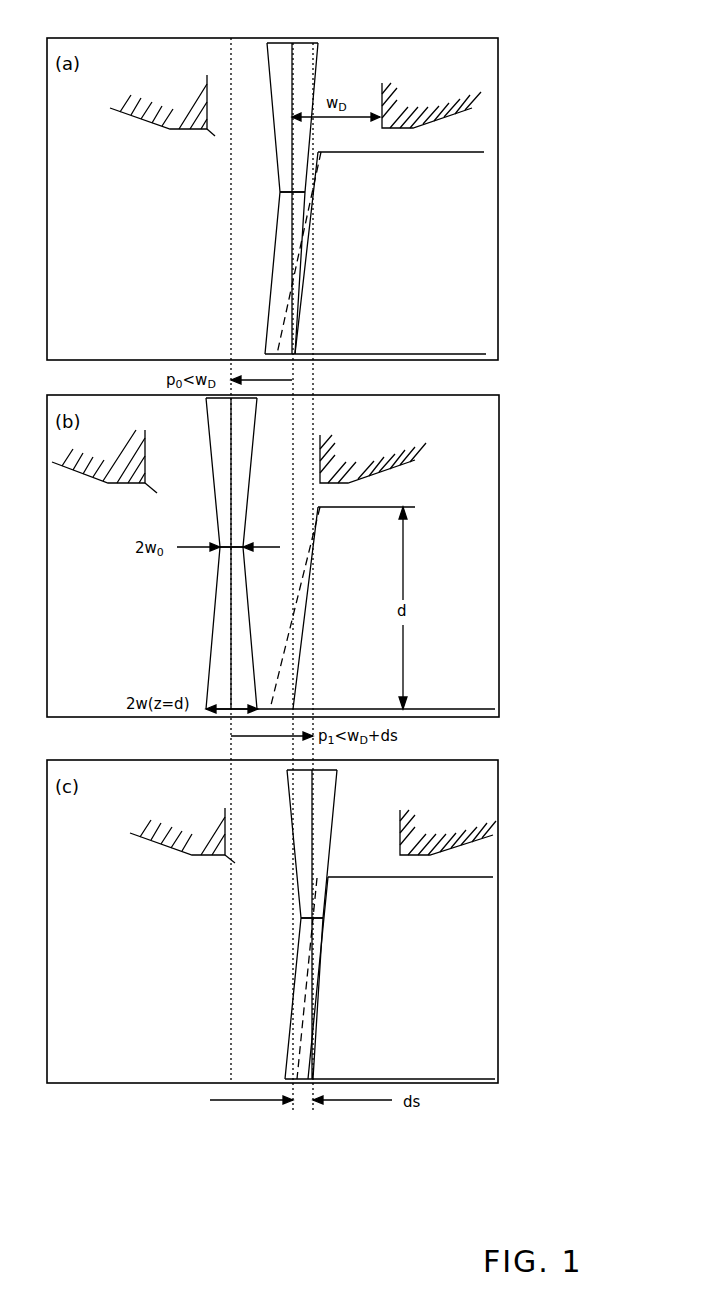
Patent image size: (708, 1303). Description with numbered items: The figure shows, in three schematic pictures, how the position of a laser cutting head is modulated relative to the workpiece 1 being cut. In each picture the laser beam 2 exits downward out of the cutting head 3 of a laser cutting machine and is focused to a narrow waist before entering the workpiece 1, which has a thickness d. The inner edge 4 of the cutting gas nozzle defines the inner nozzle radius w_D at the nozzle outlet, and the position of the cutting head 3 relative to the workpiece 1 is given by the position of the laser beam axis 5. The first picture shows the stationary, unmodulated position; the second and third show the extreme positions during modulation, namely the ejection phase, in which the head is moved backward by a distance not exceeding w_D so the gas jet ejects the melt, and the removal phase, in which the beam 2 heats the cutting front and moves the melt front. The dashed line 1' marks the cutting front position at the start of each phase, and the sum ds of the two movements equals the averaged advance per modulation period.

The workpiece 1 is at (350, 615).
The cutting front position 1' is at (285, 615).
The laser beam 2 is at (322, 803).
The cutting head 3 is at (415, 828).
The inner edge of the nozzle 4 is at (235, 863).
The laser beam axis 5 is at (308, 878).